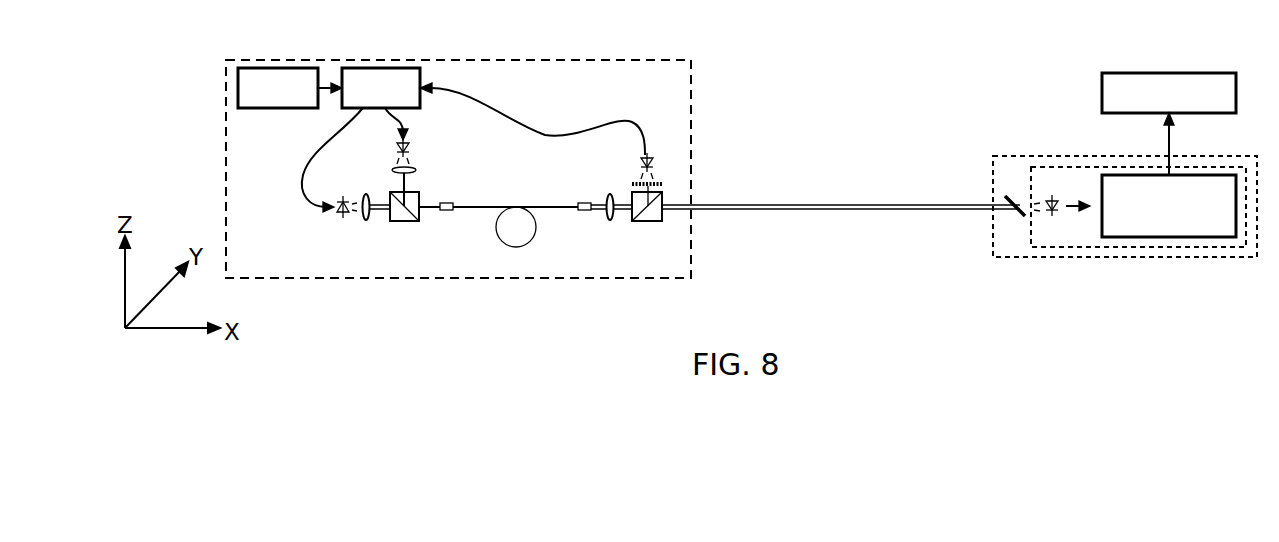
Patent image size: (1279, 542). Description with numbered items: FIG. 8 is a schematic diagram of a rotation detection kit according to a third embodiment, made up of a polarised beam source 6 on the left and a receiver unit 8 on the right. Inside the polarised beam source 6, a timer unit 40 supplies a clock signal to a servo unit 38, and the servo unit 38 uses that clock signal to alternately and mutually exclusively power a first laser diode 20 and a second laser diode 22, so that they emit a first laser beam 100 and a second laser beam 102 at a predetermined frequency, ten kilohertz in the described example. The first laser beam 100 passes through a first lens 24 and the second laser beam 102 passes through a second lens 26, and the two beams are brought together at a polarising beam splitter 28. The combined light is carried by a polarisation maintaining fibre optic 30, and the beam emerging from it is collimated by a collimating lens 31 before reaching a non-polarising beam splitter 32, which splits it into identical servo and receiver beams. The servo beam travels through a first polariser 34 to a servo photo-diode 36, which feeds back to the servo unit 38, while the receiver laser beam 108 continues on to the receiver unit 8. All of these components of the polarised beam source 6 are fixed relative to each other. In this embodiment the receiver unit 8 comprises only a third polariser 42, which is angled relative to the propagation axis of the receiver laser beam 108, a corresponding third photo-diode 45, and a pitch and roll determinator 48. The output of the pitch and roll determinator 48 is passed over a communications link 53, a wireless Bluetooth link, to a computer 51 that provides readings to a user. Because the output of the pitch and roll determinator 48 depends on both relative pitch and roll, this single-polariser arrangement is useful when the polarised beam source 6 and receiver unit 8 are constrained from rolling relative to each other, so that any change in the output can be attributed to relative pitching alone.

The polarised beam source 6 is at (438, 60).
The receiver unit 8 is at (1236, 257).
The first laser diode 20 is at (335, 215).
The second laser diode 22 is at (413, 143).
The first lens 24 is at (362, 222).
The second lens 26 is at (418, 168).
The polarising beam splitter 28 is at (405, 222).
The polarisation maintaining fibre optic 30 is at (527, 246).
The collimating lens 31 is at (612, 222).
The non-polarising beam splitter 32 is at (662, 212).
The first polariser 34 is at (662, 185).
The servo photo-diode 36 is at (655, 160).
The servo unit 38 is at (378, 68).
The timer unit 40 is at (238, 88).
The third polariser 42 is at (1022, 214).
The third photo-diode 45 is at (1049, 213).
The pitch and roll determinator 48 is at (1170, 238).
The computer 51 is at (1102, 92).
The communications link 53 is at (1169, 147).
The first laser beam 100 is at (374, 213).
The second laser beam 102 is at (407, 177).
The receiver laser beam 108 is at (870, 210).